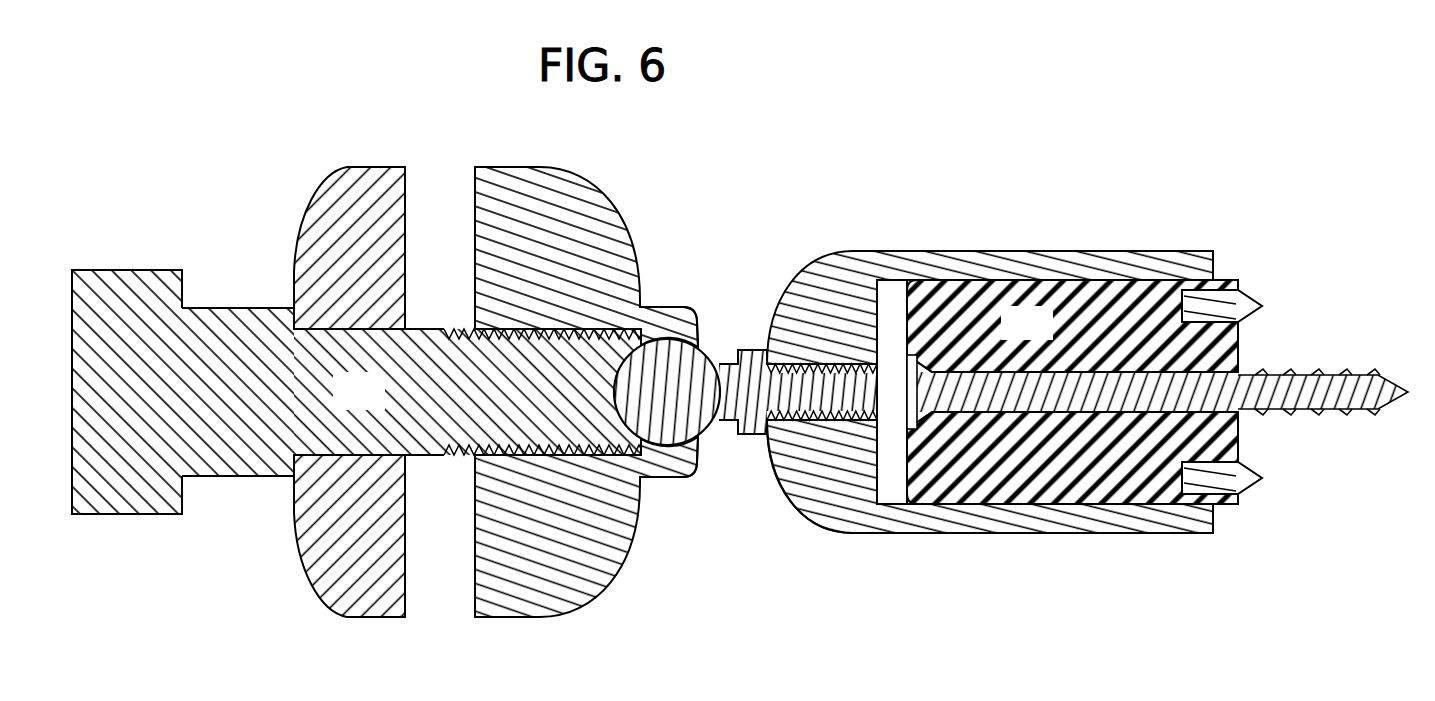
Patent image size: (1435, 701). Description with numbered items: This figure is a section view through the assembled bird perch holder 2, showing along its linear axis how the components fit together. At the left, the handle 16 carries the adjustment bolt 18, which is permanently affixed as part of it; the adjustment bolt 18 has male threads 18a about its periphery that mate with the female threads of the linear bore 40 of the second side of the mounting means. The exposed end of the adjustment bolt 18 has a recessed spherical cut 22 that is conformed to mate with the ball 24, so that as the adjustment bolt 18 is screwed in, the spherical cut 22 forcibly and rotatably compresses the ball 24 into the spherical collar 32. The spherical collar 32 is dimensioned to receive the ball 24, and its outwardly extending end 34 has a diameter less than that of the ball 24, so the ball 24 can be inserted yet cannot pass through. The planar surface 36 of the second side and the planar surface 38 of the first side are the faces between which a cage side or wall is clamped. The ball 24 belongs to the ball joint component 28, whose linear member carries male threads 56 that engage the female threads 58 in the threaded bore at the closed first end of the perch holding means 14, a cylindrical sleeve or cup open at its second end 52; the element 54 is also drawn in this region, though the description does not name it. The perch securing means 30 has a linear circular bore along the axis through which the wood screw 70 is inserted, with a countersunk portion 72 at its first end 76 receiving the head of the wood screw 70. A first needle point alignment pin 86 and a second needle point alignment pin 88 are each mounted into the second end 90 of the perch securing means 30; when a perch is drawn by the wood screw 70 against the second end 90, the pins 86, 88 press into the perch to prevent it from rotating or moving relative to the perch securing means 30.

The bird perch holder 2 is at (806, 234).
The perch holding means 14 is at (1000, 251).
The handle 16 is at (123, 514).
The adjustment bolt 18 is at (373, 406).
The male threads 18a is at (553, 329).
The recessed spherical cut 22 is at (468, 456).
The ball 24 is at (703, 441).
The ball joint component 28 is at (703, 290).
The perch securing means 30 is at (1045, 337).
The spherical collar 32 is at (604, 384).
The outwardly extending end 34 is at (697, 325).
The planar surface 36 is at (407, 592).
The planar surface 38 is at (475, 197).
The linear bore 40 is at (520, 455).
The second end 52 is at (1215, 270).
The threaded bore 54 is at (813, 413).
The male threads 56 is at (818, 383).
The female threads 58 is at (698, 448).
The wood screw 70 is at (1308, 371).
The countersunk portion 72 is at (915, 370).
The first end 76 is at (897, 316).
The first needle point alignment pin 86 is at (1252, 302).
The second needle point alignment pin 88 is at (1253, 479).
The second end 90 is at (1247, 440).